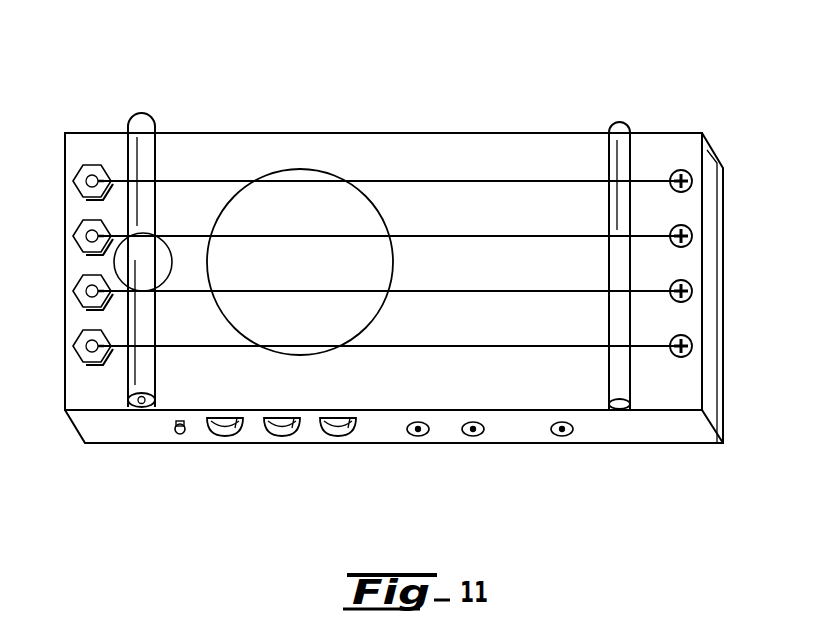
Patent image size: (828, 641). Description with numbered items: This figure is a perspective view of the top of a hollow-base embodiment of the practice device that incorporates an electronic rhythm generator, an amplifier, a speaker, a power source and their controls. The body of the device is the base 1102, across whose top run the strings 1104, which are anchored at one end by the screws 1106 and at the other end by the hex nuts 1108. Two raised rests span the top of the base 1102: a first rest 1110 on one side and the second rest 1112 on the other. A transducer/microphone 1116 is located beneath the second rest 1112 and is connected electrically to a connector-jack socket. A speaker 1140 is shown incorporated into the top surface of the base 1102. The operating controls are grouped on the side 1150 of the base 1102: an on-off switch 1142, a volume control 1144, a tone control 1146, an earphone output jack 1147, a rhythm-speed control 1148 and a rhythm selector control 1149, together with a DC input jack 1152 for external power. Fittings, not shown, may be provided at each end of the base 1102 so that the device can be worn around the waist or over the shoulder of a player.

The base 1102 is at (247, 133).
The strings 1104 is at (408, 288).
The screws 1106 is at (681, 170).
The hex nuts / tuning anchors 1108 is at (93, 165).
The right rod 1110 is at (619, 121).
The second rest 1112 is at (139, 112).
The transducer/microphone 1116 is at (160, 262).
The speaker 1140 is at (310, 207).
The on-off switch 1142 is at (180, 435).
The volume control 1144 is at (226, 437).
The tone control 1146 is at (284, 437).
The earphone output jack 1147 is at (418, 437).
The rhythm-speed control 1148 is at (340, 437).
The rhythm selector control 1149 is at (473, 437).
The side 1150 is at (100, 436).
The DC input jack 1152 is at (563, 437).